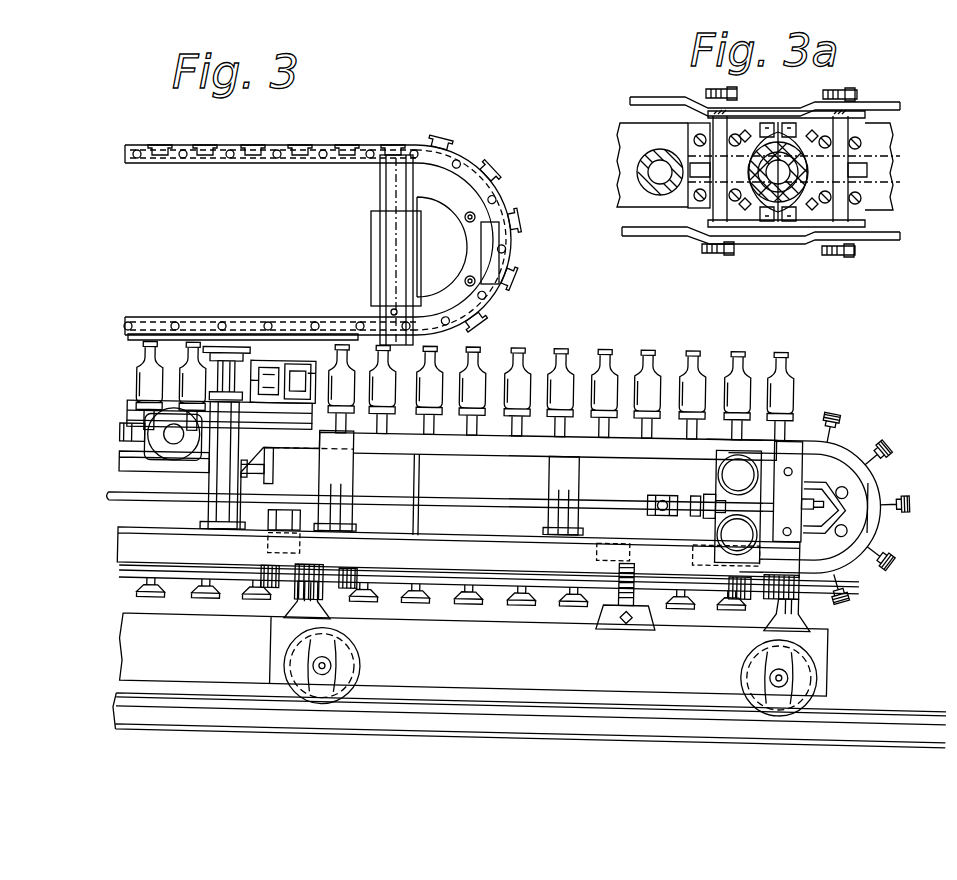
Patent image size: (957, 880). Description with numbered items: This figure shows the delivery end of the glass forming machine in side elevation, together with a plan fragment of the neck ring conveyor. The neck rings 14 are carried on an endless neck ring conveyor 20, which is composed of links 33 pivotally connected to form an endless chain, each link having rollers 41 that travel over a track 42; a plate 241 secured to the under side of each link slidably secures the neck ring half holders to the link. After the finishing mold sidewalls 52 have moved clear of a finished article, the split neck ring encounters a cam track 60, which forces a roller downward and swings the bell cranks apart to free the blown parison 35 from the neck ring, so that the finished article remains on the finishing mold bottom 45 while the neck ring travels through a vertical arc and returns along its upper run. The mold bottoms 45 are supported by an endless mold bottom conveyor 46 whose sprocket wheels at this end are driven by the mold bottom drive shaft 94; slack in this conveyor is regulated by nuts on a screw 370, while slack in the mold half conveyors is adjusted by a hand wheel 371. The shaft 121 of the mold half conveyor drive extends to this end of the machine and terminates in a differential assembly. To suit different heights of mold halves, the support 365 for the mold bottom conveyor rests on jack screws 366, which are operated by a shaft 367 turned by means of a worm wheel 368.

In FIG. 3, the neck ring 14 is at (173, 139).
In FIG. 3, the neck ring conveyor 20 is at (300, 148).
In FIG. 3, the track 42 is at (354, 164).
In FIG. 3, the cam track 60 is at (345, 316).
In FIG. 3, the finishing mold sidewalls 52 is at (130, 356).
In FIG. 3, the shaft 121 is at (125, 432).
In FIG. 3, the hand wheel 371 is at (284, 457).
In FIG. 3, the mold bottom drive shaft 94 is at (463, 493).
In FIG. 3, the support for the mold bottom conveyor 365 is at (642, 448).
In FIG. 3, the parison 35 is at (520, 347).
In FIG. 3, the finishing mold bottom 45 is at (833, 418).
In FIG. 3, the mold bottom conveyor 46 is at (892, 486).
In FIG. 3, the screw 370 is at (860, 527).
In FIG. 3, the jack screws 366 is at (288, 617).
In FIG. 3, the shaft 367 is at (513, 597).
In FIG. 3, the worm wheel 368 is at (620, 596).
In FIG. 3A, the plate 241 is at (625, 140).
In FIG. 3A, the rollers 41 is at (848, 92).
In FIG. 3A, the links 33 is at (790, 243).